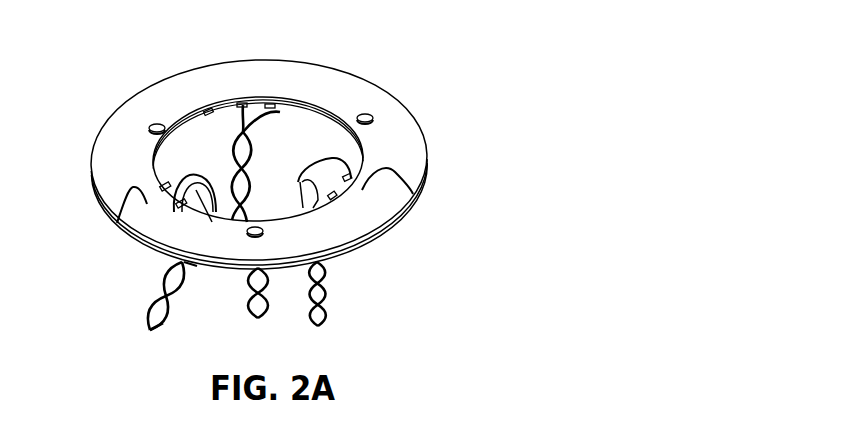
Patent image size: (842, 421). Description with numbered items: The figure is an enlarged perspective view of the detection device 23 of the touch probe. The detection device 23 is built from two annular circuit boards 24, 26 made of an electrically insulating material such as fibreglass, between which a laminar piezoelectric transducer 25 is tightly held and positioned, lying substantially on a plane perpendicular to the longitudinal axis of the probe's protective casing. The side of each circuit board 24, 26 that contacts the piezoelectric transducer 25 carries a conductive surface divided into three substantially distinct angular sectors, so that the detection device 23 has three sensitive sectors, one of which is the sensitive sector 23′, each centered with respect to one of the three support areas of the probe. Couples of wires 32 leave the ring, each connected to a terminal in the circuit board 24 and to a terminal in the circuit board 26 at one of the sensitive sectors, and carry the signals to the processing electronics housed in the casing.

The detection device 23 is at (443, 84).
The sensitive sector 23′ is at (117, 223).
The annular circuit board 24 is at (348, 248).
The laminar piezoelectric transducer 25 is at (419, 183).
The annular circuit board 26 is at (132, 139).
The wires 32 is at (250, 298).